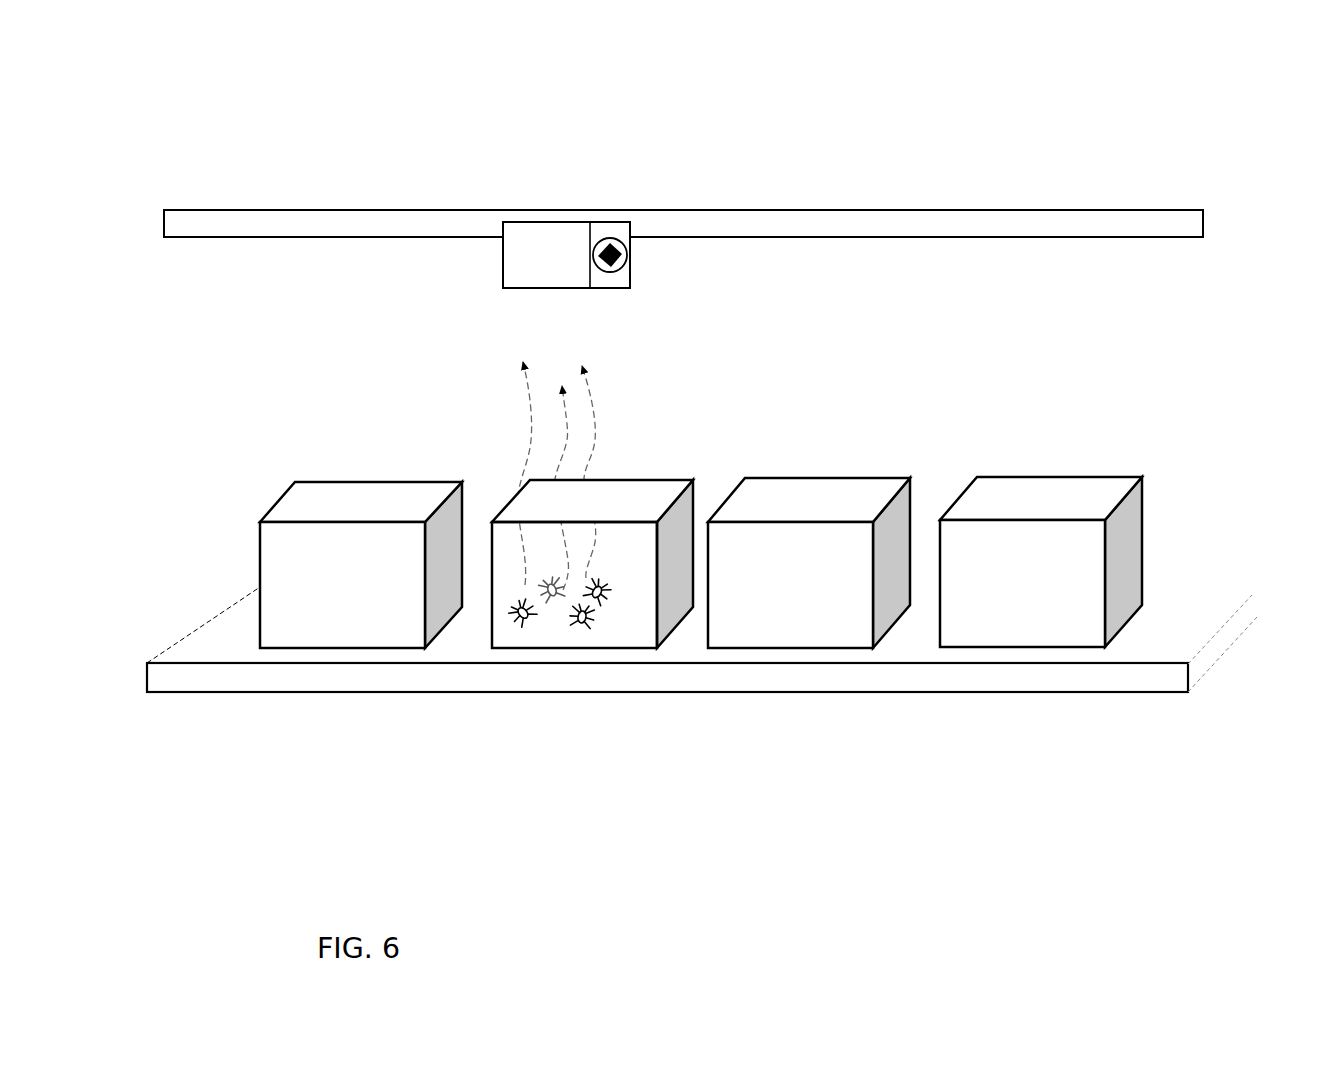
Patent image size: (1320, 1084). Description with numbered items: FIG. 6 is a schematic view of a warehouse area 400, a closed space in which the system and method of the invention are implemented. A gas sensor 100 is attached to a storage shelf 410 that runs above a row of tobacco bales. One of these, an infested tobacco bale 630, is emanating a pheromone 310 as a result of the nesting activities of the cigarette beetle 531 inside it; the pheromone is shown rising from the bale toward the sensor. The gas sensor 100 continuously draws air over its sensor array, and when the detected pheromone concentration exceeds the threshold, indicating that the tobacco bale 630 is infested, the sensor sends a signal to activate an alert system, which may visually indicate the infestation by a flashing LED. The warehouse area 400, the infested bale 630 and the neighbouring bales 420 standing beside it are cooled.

The warehouse area 400 is at (790, 180).
The storage shelf 410 is at (440, 233).
The gas sensor 100 is at (656, 268).
The pheromone 310 is at (530, 398).
The neighbouring bales 420 is at (279, 453).
The infested tobacco bale 630 is at (657, 456).
The cigarette beetle 531 is at (522, 615).